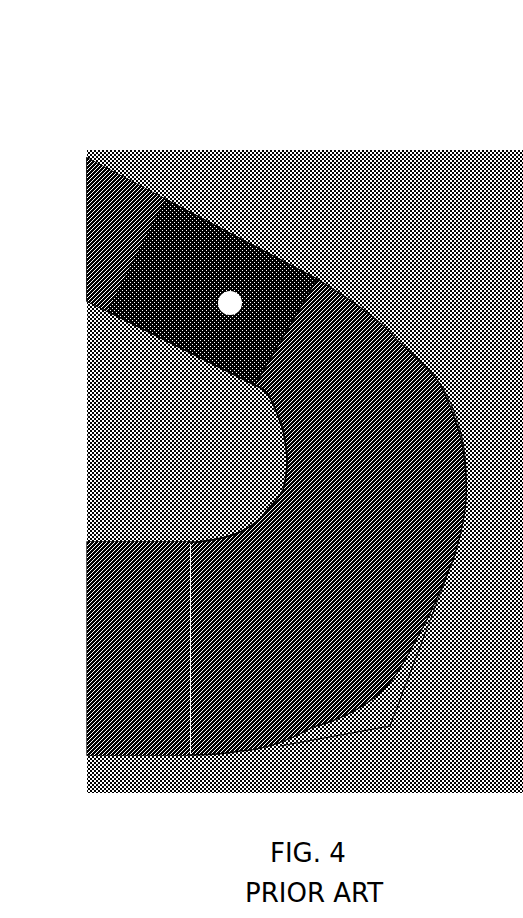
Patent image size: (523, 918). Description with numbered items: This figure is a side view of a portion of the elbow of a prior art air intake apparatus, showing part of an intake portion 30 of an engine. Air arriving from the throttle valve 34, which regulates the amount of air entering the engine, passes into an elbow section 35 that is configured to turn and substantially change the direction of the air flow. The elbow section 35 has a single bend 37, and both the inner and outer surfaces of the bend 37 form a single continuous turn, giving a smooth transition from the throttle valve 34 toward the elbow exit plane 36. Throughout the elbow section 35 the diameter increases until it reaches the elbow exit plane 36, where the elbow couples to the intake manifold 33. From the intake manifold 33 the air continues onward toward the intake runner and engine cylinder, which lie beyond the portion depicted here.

The intake portion 30 is at (347, 148).
The intake manifold 33 is at (105, 677).
The throttle valve 34 is at (213, 232).
The elbow section 35 is at (0, 91).
The elbow exit plane 36 is at (183, 697).
The bend 37 is at (276, 469).